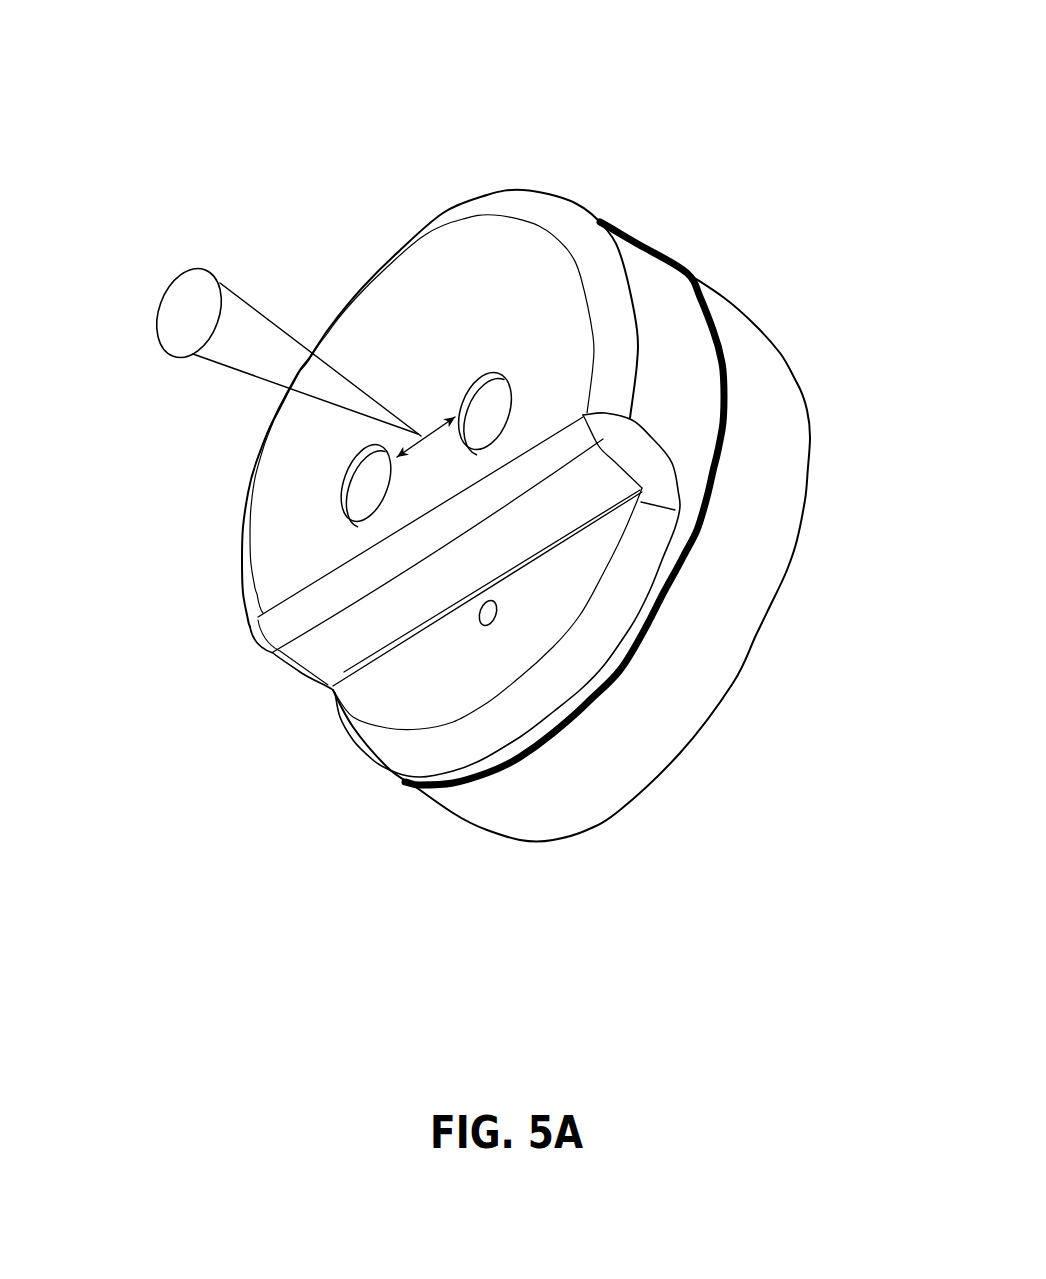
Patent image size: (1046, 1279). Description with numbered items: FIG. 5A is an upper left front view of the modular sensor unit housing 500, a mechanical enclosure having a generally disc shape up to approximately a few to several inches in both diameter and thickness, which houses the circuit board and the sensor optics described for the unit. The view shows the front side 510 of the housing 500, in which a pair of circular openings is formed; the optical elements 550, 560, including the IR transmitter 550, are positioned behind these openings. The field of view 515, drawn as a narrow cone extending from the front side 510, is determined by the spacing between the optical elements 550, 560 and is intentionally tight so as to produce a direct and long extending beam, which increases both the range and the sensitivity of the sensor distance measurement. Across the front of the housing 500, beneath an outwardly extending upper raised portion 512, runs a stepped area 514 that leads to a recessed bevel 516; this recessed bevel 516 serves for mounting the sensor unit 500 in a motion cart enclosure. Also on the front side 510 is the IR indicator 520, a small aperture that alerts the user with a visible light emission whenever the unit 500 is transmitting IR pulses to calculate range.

The modular sensor unit housing 500 is at (330, 168).
The front side 510 is at (175, 97).
The upper raised portion 512 is at (463, 275).
The stepped area 514 is at (548, 500).
The field of view 515 is at (253, 360).
The recessed bevel 516 is at (540, 578).
The IR indicator 520 is at (492, 615).
The IR transmitter 550 is at (373, 481).
The optical element 560 is at (497, 407).